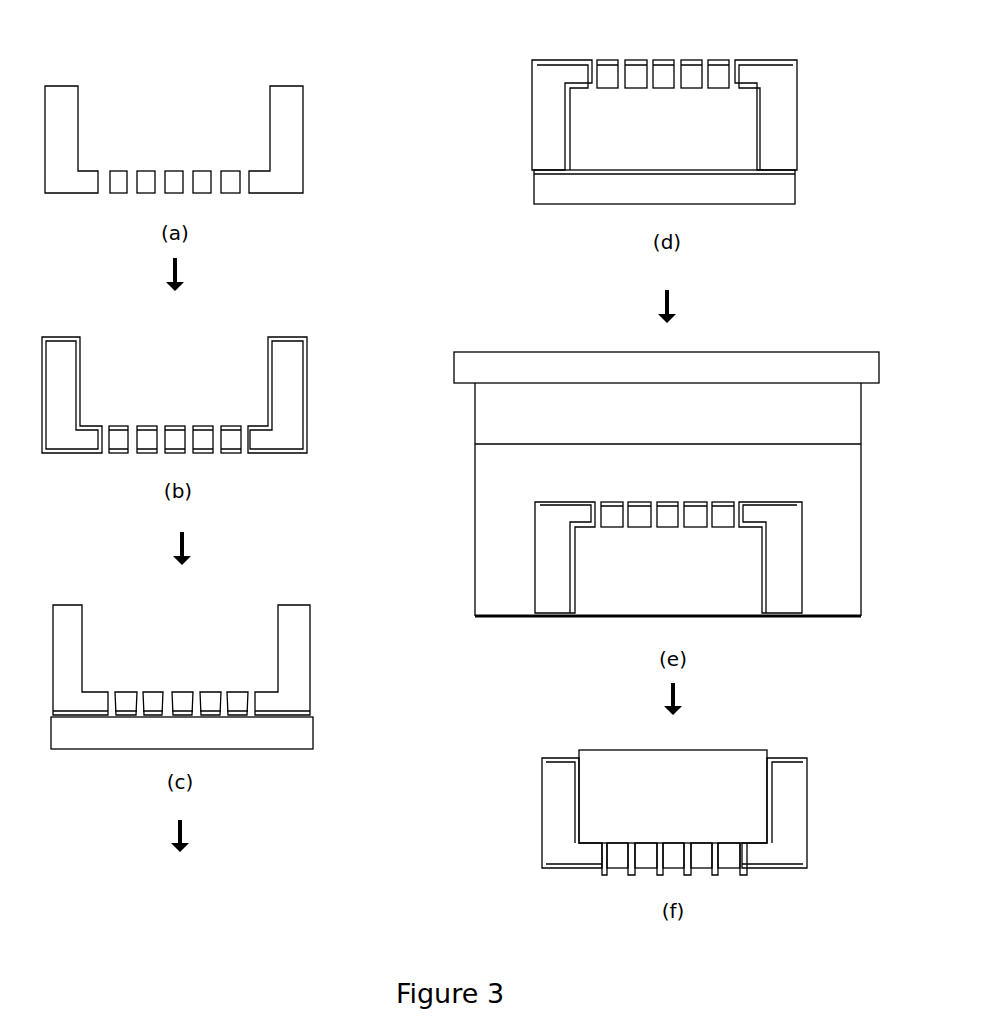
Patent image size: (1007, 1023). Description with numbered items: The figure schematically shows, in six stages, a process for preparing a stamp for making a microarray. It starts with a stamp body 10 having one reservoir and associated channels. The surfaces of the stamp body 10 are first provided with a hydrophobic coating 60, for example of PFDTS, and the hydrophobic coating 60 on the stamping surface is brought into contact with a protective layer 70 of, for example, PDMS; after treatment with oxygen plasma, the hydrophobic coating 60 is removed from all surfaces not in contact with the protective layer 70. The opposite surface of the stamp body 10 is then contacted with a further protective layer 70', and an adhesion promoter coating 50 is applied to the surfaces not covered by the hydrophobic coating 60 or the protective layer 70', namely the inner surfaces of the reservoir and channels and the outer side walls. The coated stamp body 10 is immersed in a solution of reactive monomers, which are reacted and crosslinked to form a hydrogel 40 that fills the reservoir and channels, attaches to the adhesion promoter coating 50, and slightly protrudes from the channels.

The stamp body 10 is at (288, 113).
The hydrophobic coating 60 is at (297, 450).
The protective layer 70 is at (225, 724).
The adhesion promoter coating 50 is at (758, 133).
The protective layer 70' is at (701, 182).
The hydrogel 40 is at (728, 773).